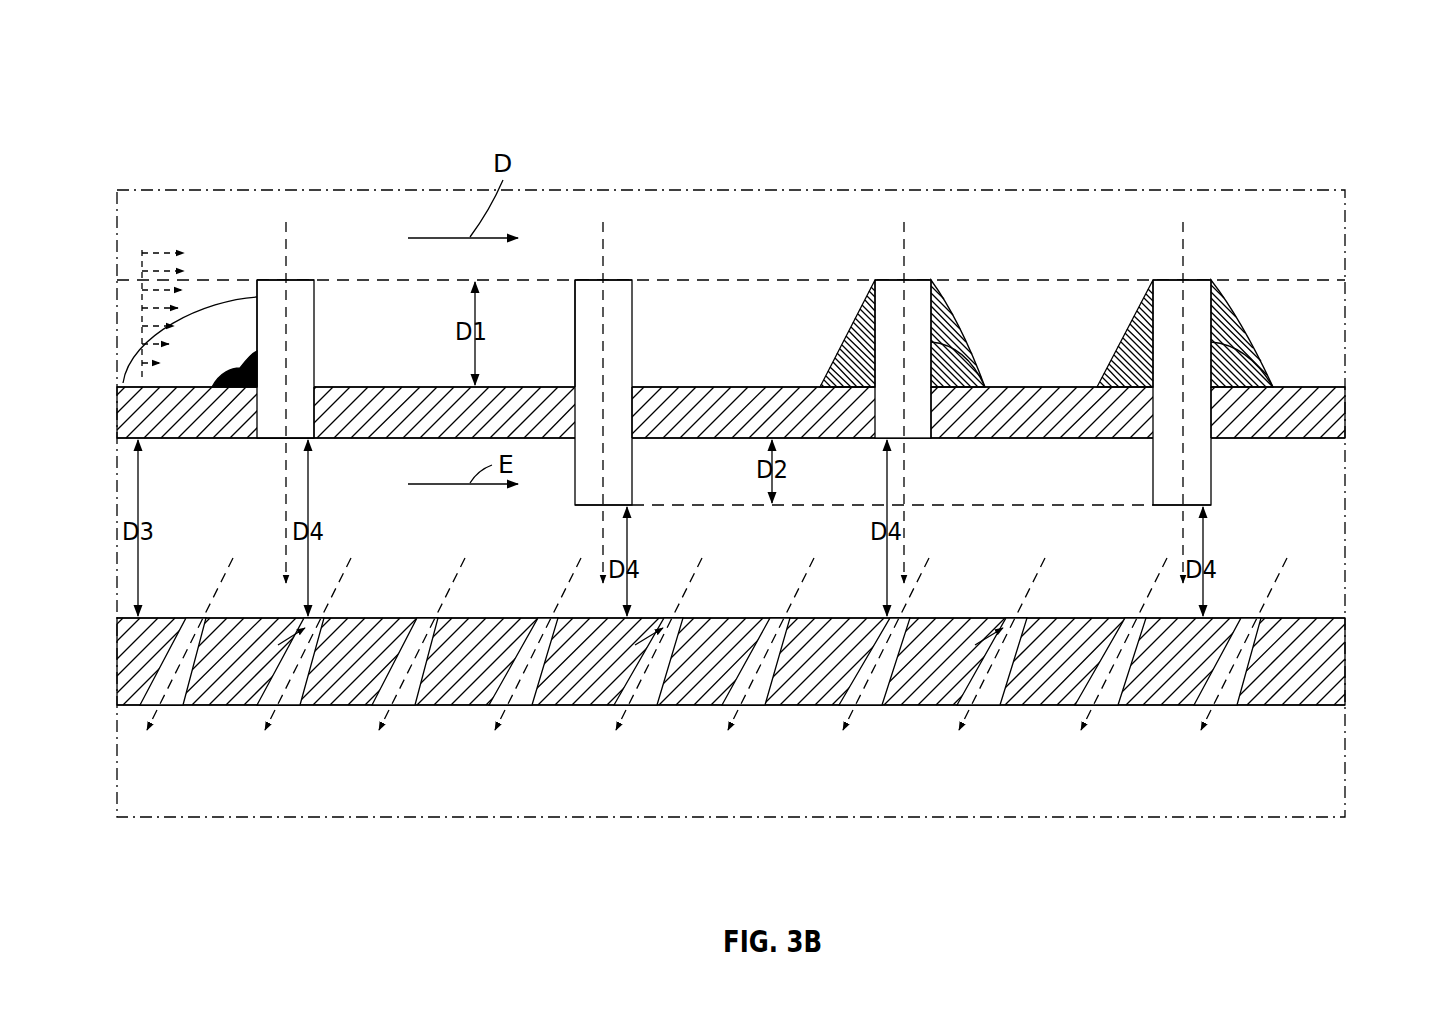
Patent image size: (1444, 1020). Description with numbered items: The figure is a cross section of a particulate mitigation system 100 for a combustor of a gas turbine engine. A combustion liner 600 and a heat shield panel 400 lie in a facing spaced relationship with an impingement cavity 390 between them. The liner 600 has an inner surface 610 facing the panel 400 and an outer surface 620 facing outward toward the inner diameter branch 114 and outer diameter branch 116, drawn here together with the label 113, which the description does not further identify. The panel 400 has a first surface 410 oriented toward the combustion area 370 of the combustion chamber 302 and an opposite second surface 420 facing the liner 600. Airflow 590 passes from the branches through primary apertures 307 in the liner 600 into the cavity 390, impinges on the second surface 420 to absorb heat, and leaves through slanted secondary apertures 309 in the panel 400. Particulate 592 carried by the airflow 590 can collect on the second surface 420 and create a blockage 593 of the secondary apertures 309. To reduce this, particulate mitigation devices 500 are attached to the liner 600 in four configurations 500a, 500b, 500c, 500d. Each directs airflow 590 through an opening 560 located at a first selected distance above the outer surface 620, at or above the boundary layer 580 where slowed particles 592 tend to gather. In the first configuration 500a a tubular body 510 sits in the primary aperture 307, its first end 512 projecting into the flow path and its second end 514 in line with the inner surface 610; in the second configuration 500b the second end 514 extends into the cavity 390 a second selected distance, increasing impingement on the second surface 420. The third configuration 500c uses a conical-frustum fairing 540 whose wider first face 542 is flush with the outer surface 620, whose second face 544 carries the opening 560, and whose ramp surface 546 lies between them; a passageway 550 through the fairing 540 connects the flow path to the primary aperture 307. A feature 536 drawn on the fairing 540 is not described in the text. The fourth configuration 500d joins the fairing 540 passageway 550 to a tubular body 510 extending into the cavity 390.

The particulate mitigation system 100 is at (165, 82).
The circuit board component 113 is at (749, 224).
The inner diameter branch 114 is at (806, 224).
The outer diameter branch 116 is at (862, 224).
The combustion chamber 302 is at (747, 801).
The combustion area 370 is at (803, 801).
The primary apertures 307 is at (315, 415).
The secondary apertures 309 is at (189, 682).
The impingement cavity 390 is at (192, 484).
The heat shield panel 400 is at (1325, 660).
The first surface 410 is at (1322, 705).
The second surface 420 is at (1322, 618).
The particulate mitigation device 500 is at (332, 260).
The first configuration 500a is at (335, 350).
The second configuration 500b is at (645, 350).
The third configuration 500c is at (990, 350).
The fourth configuration 500d is at (1258, 350).
The tubular body 510 is at (257, 298).
The first end 512 is at (300, 278).
The second end 514 is at (273, 440).
The second fillet 536 is at (947, 317).
The fairing 540 is at (855, 323).
The first face 542 is at (838, 407).
The second face 544 is at (918, 278).
The ramp surface 546 is at (990, 387).
The passageway 550 is at (987, 374).
The opening 560 is at (283, 277).
The boundary layer 580 is at (140, 378).
The airflow 590 is at (288, 222).
The particulate 592 is at (250, 357).
The blockage 593 is at (618, 644).
The combustion liner 600 is at (1320, 415).
The inner surface 610 is at (1322, 440).
The outer surface 620 is at (1330, 385).